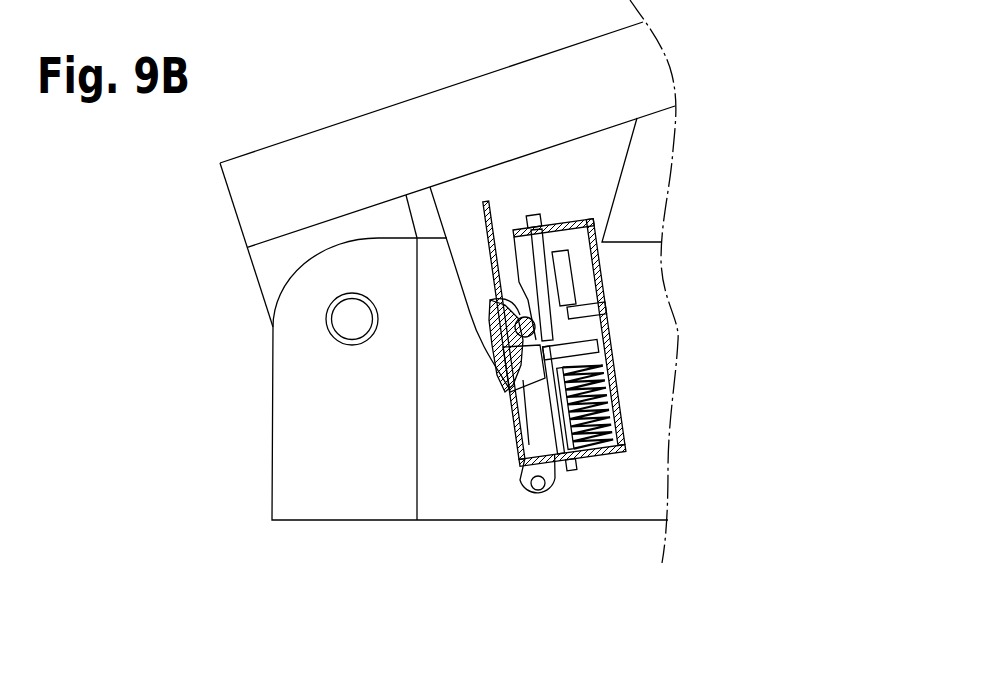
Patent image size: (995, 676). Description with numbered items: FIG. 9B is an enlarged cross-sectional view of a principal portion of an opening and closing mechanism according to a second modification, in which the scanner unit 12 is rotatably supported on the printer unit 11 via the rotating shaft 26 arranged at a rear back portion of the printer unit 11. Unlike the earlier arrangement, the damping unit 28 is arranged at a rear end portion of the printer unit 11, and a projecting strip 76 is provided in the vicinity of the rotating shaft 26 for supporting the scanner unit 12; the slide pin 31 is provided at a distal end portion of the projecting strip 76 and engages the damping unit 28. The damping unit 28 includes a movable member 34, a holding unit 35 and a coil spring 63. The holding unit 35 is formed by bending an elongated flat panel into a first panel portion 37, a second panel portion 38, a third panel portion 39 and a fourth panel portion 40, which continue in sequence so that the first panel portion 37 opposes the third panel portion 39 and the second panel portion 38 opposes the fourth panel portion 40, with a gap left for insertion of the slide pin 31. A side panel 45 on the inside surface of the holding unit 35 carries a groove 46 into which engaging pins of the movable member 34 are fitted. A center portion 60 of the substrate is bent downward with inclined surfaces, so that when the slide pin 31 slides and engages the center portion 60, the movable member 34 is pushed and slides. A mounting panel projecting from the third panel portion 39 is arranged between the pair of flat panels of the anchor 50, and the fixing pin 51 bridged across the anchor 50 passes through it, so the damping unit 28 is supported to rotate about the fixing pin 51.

The printer unit 11 is at (275, 471).
The scanner unit 12 is at (296, 148).
The rotating shaft 26 is at (337, 322).
The damping unit 28 is at (636, 308).
The slide pin 31 is at (512, 321).
The movable member 34 is at (536, 214).
The holding unit 35 is at (612, 336).
The first panel portion 37 is at (587, 218).
The second panel portion 38 is at (618, 421).
The third panel portion 39 is at (613, 458).
The fourth panel portion 40 is at (480, 218).
The side panel 45 is at (583, 250).
The groove 46 is at (568, 298).
The anchor 50 is at (505, 479).
The fixing pin 51 is at (541, 490).
The center portion 60 is at (493, 363).
The coil spring 63 is at (612, 395).
The projecting strip 76 is at (618, 143).